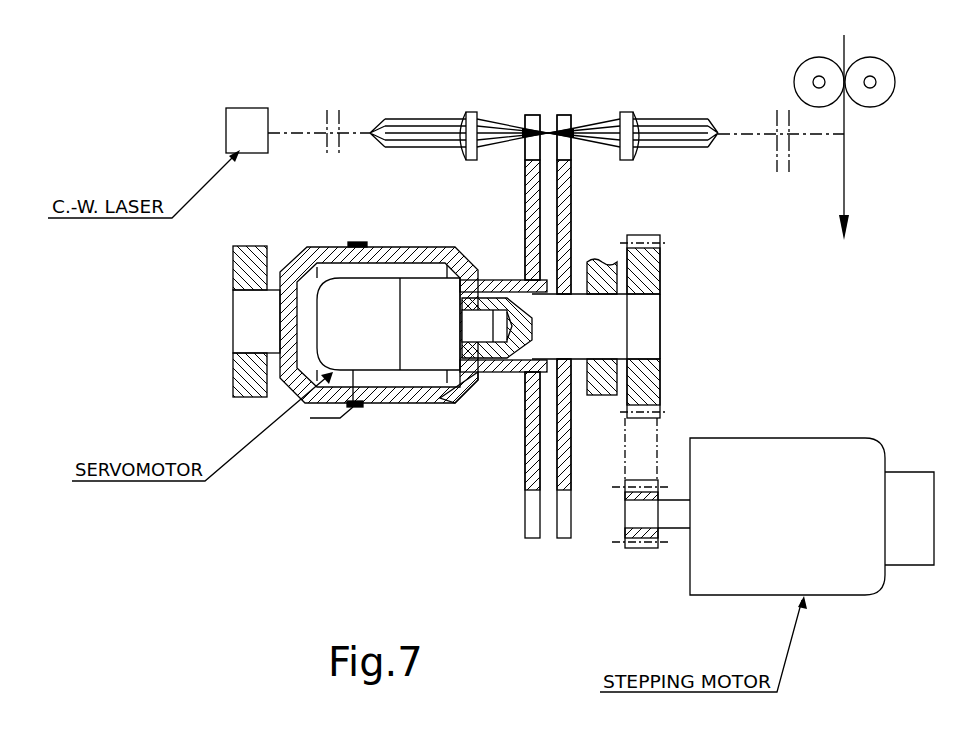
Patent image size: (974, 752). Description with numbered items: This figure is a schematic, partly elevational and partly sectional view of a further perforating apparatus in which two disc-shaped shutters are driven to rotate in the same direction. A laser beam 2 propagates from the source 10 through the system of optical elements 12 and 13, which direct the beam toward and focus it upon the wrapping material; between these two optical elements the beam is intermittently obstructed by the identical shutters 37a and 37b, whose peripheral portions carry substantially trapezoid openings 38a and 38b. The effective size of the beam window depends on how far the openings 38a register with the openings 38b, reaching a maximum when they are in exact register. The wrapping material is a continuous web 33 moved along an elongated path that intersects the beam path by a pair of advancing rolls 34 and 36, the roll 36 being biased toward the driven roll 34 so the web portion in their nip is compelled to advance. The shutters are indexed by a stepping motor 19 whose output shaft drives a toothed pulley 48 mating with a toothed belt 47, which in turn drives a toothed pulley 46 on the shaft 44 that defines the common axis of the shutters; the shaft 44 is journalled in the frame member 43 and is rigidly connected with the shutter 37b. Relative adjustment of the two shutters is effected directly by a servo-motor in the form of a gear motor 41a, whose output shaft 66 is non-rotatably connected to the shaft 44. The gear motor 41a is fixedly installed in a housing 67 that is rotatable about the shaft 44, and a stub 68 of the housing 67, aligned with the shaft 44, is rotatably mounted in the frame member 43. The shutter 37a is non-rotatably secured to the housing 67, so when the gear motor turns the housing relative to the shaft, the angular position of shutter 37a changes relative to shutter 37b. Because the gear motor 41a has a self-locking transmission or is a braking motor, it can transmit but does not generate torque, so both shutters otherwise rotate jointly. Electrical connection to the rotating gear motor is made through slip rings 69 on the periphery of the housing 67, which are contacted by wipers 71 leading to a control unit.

The source 10 is at (250, 110).
The laser beam 2 is at (547, 126).
The optical element 12 is at (470, 110).
The optical element 13 is at (625, 116).
The shutter 37a is at (527, 455).
The shutter 37b is at (565, 456).
The opening 38a is at (532, 114).
The opening 38b is at (567, 116).
The advancing roll 34 is at (796, 84).
The advancing roll 36 is at (893, 83).
The web 33 is at (846, 200).
The frame member 43 is at (250, 248).
The stub 68 is at (240, 307).
The housing 67 is at (398, 250).
The gear motor 41a is at (420, 360).
The slip rings 69 is at (355, 242).
The wipers 71 is at (325, 420).
The output shaft 66 is at (480, 315).
The shaft 44 is at (645, 316).
The toothed pulley 46 is at (648, 250).
The toothed belt 47 is at (660, 442).
The toothed pulley 48 is at (637, 548).
The stepping motor 19 is at (797, 525).